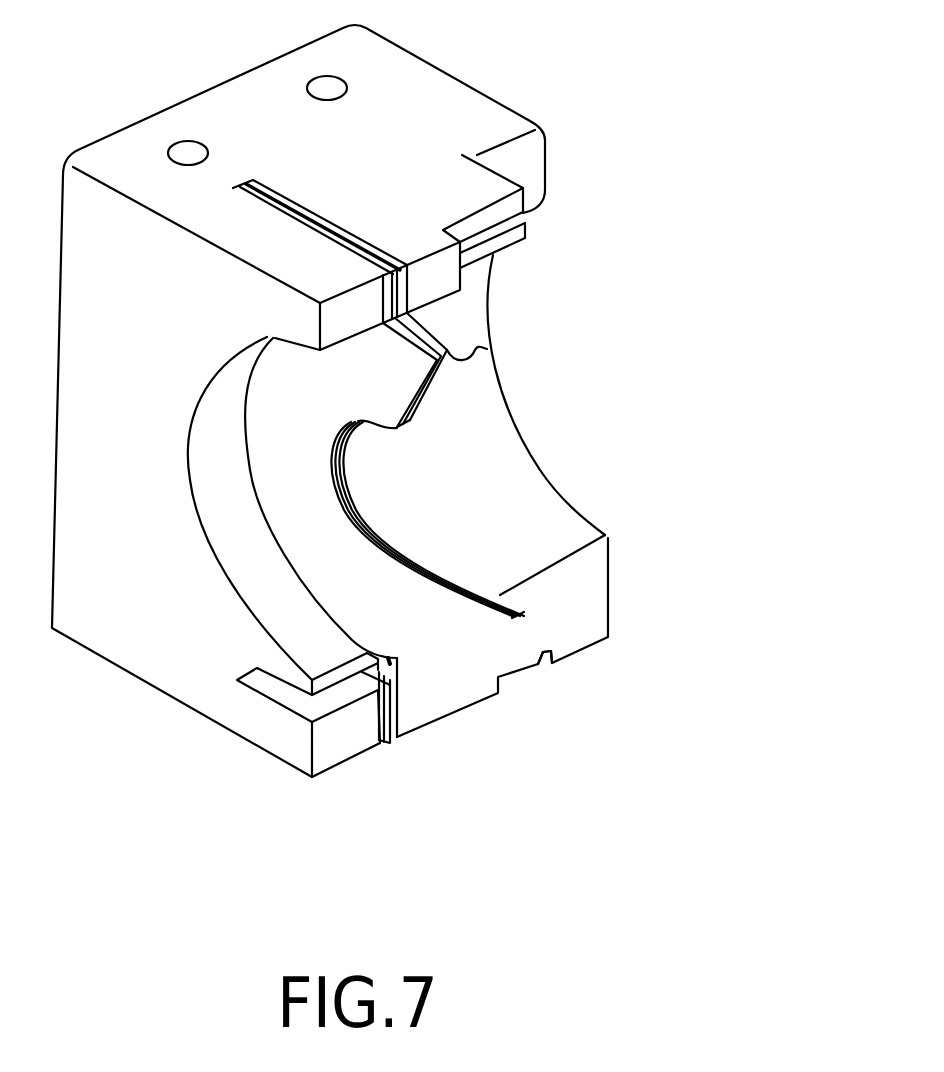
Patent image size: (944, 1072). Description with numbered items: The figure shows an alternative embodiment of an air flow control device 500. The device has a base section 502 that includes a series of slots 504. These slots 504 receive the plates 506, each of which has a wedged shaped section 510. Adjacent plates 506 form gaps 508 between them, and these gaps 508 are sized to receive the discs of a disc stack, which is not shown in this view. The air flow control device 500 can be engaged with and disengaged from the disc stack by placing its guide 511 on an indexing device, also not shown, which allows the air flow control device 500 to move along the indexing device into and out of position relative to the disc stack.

The air flow control device 500 is at (633, 418).
The base section 502 is at (605, 533).
The slots 504 is at (289, 200).
The plates 506 is at (437, 645).
The gaps 508 is at (515, 615).
The wedged shaped section 510 is at (448, 352).
The guide 511 is at (527, 678).